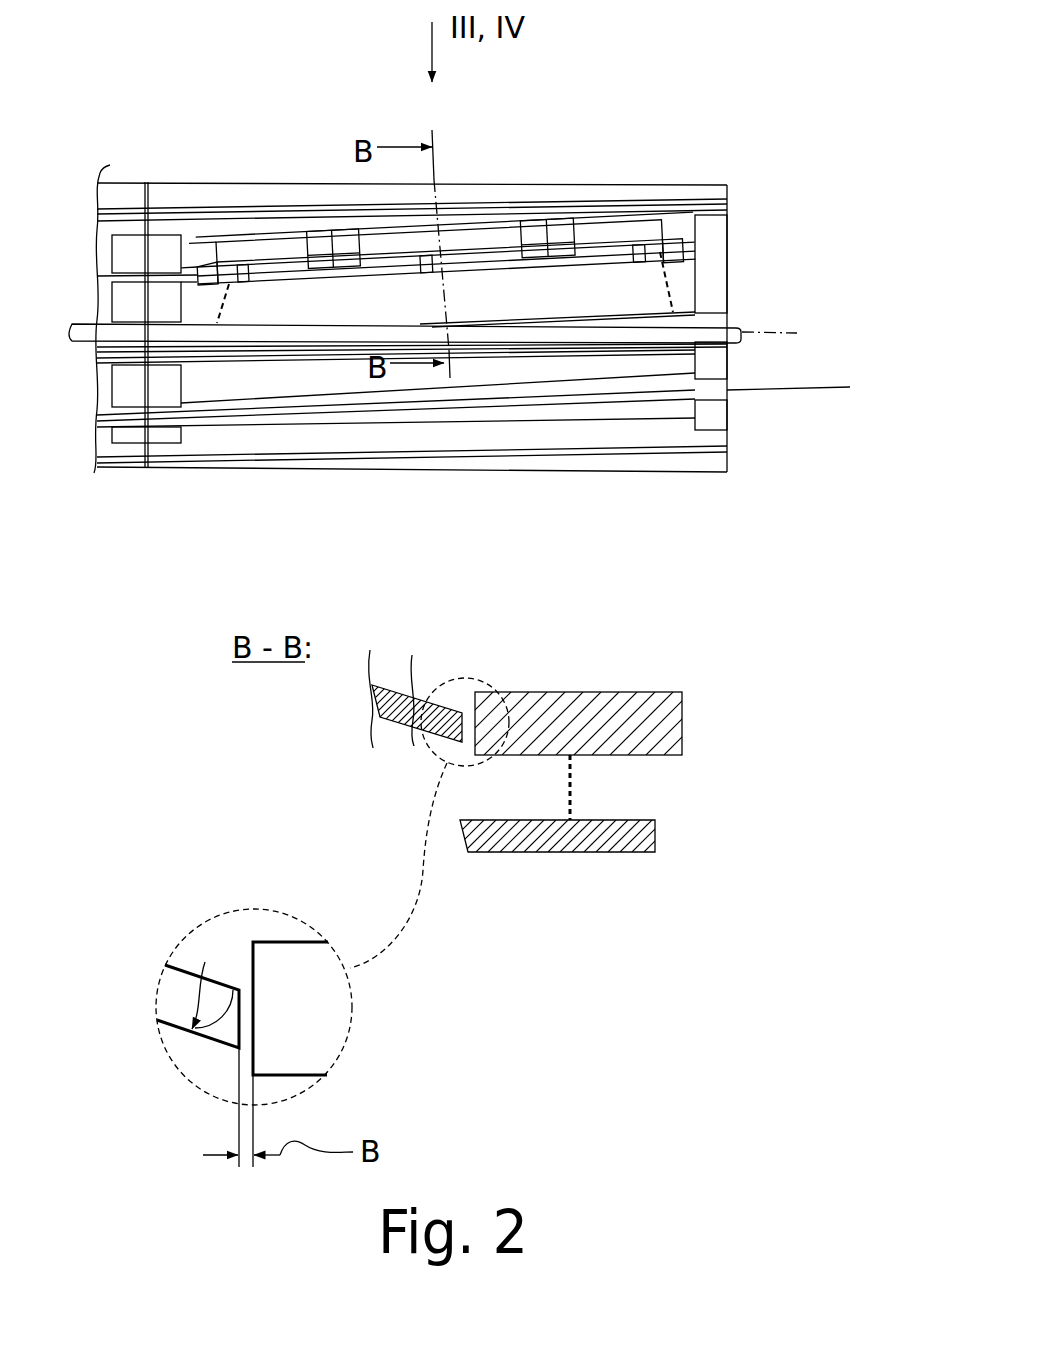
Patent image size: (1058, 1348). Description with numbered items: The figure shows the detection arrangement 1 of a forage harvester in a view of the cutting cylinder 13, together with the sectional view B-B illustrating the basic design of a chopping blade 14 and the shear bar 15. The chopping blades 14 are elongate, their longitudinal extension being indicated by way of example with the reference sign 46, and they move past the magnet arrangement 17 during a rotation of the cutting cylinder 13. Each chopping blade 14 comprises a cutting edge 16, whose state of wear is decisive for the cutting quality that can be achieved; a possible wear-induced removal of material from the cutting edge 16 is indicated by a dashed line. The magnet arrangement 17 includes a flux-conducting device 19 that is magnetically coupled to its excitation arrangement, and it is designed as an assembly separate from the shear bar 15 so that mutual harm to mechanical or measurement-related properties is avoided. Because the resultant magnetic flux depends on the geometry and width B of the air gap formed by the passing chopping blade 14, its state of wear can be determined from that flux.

The detection arrangement 1 is at (668, 100).
The cutting cylinder 13 is at (742, 437).
The chopping blade 14 is at (727, 318).
The shear bar 15 is at (578, 335).
The cutting edge 16 is at (238, 1050).
The magnet arrangement 17 is at (496, 220).
The flux-conducting device 19 is at (650, 222).
The longitudinal extension of the chopping blades 46 is at (795, 388).